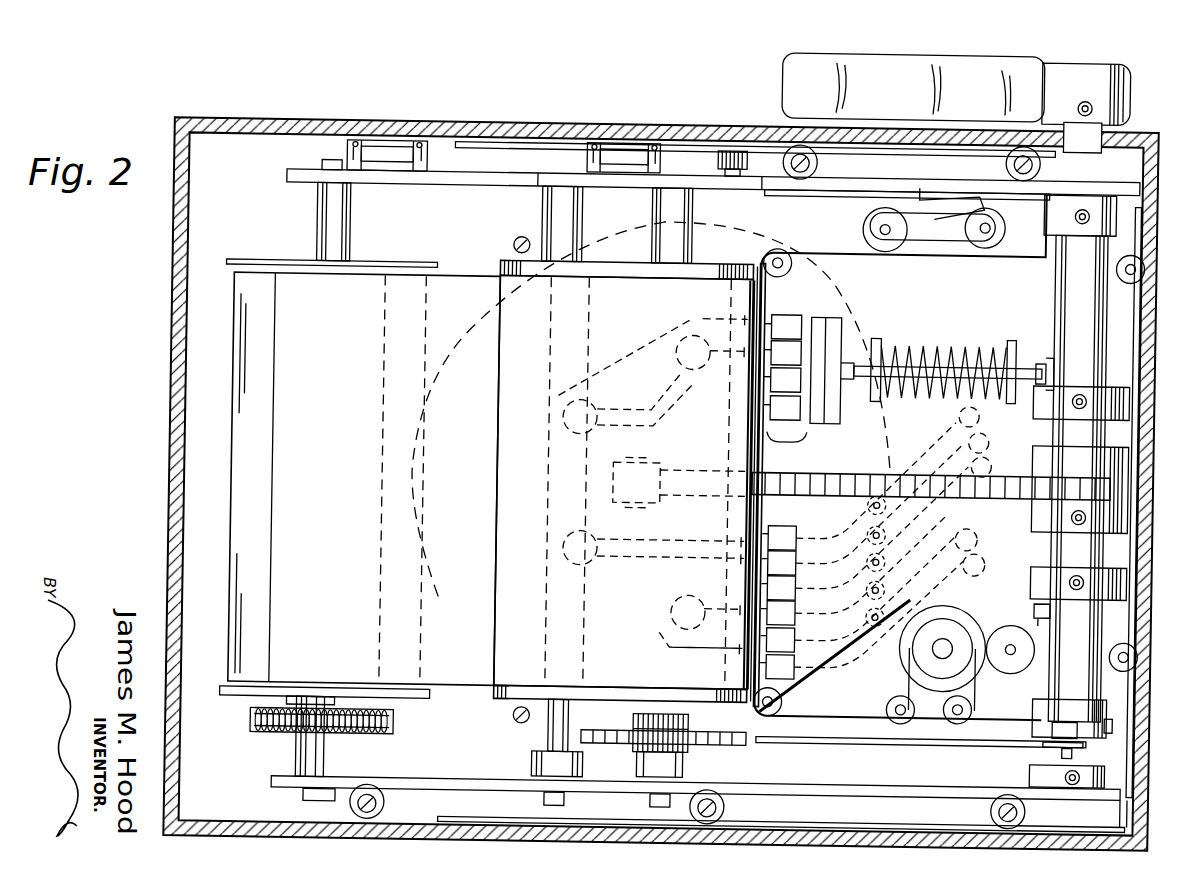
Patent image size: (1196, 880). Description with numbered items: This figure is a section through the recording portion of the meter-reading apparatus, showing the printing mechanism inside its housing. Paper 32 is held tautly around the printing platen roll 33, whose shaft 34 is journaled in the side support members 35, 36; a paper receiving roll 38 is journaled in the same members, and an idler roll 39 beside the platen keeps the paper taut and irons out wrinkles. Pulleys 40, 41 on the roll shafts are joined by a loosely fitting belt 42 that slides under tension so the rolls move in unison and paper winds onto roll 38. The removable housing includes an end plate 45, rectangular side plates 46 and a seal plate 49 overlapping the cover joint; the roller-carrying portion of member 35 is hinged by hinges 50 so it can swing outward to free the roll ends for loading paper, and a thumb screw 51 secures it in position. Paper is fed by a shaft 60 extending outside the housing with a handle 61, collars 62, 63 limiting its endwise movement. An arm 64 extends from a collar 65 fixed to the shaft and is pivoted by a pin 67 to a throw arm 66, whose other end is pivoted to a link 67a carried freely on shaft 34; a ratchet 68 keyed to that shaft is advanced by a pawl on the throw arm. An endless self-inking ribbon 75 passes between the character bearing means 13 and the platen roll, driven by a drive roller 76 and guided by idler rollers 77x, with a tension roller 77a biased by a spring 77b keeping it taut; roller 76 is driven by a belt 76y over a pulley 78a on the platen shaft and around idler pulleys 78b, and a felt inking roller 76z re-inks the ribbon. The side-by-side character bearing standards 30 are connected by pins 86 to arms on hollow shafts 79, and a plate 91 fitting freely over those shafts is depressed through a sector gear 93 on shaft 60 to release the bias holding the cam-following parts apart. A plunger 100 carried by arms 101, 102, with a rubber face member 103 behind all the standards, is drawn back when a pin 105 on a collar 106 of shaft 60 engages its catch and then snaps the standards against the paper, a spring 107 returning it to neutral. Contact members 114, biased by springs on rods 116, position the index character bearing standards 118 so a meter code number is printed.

The character bearing standards 13 is at (786, 448).
The elongate standards 30 is at (782, 368).
The paper 32 is at (491, 463).
The printing platen roll 33 is at (748, 467).
The shaft 34 is at (693, 226).
The side support member 35 is at (713, 207).
The side support member 36 is at (696, 767).
The paper receiving roll 38 is at (329, 439).
The idler roll 39 is at (508, 242).
The pulley 40 is at (342, 748).
The pulley 41 is at (355, 726).
The belt 42 is at (340, 720).
The end plate 45 is at (675, 484).
The rectangular side plates 46 is at (750, 486).
The seal plate 49 is at (813, 463).
The hinges 50 is at (504, 130).
The thumb screw 51 is at (722, 131).
The shaft 60 is at (1055, 475).
The handle 61 is at (931, 102).
The collar 62 is at (1063, 216).
The collar 63 is at (1044, 774).
The arm 64 is at (1069, 706).
The collar 65 is at (1143, 711).
The throw arm 66 is at (921, 752).
The pin 67 is at (1034, 753).
The link 67a is at (664, 723).
The ratchet 68 is at (676, 761).
The endless self-inking ribbon 75 is at (901, 456).
The drive roller 76 is at (943, 632).
The belt 76y is at (914, 679).
The felt inking roller 76z is at (1007, 664).
The tension roller 77a is at (912, 224).
The spring 77b is at (931, 200).
The rollers 77x is at (969, 467).
The pulley 78a is at (589, 735).
The idler pulleys 78b is at (943, 719).
The hollow shafts 79 is at (653, 467).
The pin 86 is at (711, 466).
The plate 91 is at (625, 351).
The sector gear 93 is at (930, 501).
The plunger 100 is at (946, 496).
The arm 101 is at (892, 379).
The arm 102 is at (1003, 389).
The face member 103 is at (833, 351).
The pin 105 is at (1049, 467).
The collar 106 is at (1052, 450).
The spring 107 is at (943, 350).
The contact members 114 is at (911, 550).
The rods 116 is at (843, 560).
The character bearing standards 118 is at (778, 603).